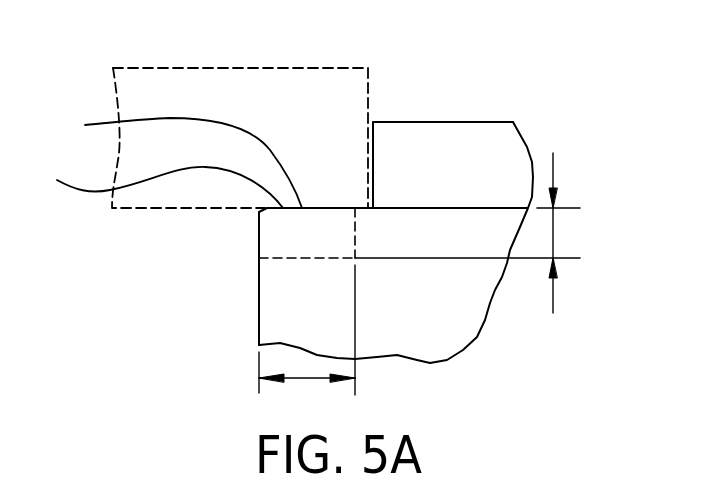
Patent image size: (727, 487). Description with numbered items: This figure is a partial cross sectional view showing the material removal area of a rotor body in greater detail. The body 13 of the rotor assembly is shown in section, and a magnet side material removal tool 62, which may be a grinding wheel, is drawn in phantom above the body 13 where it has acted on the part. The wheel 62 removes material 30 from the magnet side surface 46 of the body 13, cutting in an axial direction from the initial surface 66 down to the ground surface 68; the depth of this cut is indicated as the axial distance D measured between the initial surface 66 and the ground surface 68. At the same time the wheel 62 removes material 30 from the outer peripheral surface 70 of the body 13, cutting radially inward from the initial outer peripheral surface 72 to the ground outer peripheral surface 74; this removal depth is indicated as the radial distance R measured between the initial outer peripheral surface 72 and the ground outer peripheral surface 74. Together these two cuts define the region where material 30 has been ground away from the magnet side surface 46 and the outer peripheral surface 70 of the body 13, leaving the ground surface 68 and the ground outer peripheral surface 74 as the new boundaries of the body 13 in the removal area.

The body 13 is at (252, 347).
The material 30 is at (395, 93).
The magnet side surface 46 is at (177, 161).
The magnet side material removal tool 62 is at (273, 68).
The initial surface 66 is at (152, 187).
The ground surface 68 is at (322, 257).
The outer peripheral surface 70 is at (259, 231).
The initial outer peripheral surface 72 is at (259, 251).
The ground outer peripheral surface 74 is at (355, 243).
The radial distance R is at (302, 383).
The axial distance D is at (553, 160).